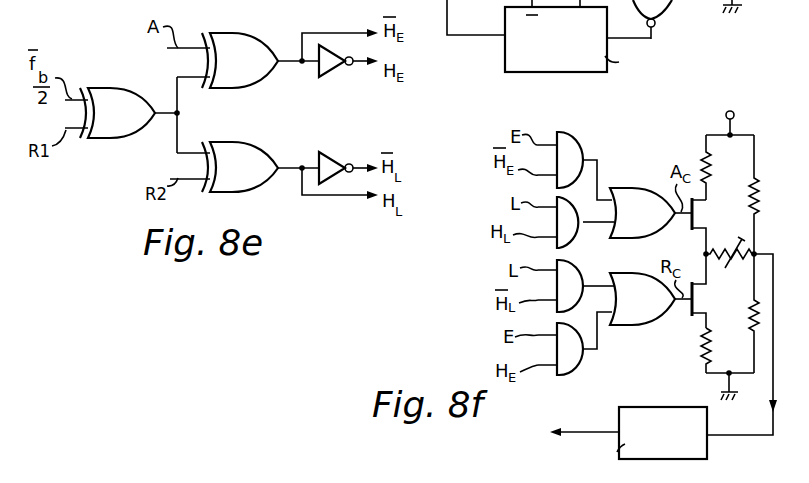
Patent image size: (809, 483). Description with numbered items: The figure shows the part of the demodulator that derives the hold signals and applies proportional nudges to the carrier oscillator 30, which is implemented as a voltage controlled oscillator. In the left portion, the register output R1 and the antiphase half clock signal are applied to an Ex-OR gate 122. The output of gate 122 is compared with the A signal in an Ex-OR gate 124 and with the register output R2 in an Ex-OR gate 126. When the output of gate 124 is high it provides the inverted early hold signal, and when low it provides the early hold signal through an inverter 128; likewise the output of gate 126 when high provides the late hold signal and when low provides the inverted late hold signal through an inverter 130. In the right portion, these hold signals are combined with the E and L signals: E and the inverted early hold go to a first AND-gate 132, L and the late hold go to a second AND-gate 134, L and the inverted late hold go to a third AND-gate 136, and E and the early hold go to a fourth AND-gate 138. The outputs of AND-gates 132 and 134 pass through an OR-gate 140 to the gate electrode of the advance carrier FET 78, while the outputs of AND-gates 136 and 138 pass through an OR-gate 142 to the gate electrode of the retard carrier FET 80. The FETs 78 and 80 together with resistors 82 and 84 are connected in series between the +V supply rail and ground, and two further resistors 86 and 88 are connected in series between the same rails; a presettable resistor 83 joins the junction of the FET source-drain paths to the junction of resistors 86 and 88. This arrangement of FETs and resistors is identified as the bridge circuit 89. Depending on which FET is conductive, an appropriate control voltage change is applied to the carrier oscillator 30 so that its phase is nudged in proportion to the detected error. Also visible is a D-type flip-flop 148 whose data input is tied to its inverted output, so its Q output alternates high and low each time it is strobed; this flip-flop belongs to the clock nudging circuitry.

In FIG. 8E, the Ex-OR gate 122 is at (125, 100).
In FIG. 8E, the Ex-OR gate 124 is at (251, 49).
In FIG. 8E, the Ex-OR gate 126 is at (253, 156).
In FIG. 8E, the inverter 128 is at (331, 70).
In FIG. 8E, the inverter 130 is at (334, 160).
In FIG. 8F, the D-type flip-flop 148 is at (505, 17).
In FIG. 8F, the first AND-gate 132 is at (568, 142).
In FIG. 8F, the second AND-gate 134 is at (573, 240).
In FIG. 8F, the third AND-gate 136 is at (573, 305).
In FIG. 8F, the fourth AND-gate 138 is at (569, 370).
In FIG. 8F, the OR-gate 140 is at (627, 198).
In FIG. 8F, the OR-gate 142 is at (645, 313).
In FIG. 8F, the advance carrier FET 78 is at (698, 208).
In FIG. 8F, the retard carrier FET 80 is at (697, 302).
In FIG. 8F, the resistor 82 is at (705, 152).
In FIG. 8F, the presettable resistor 83 is at (731, 266).
In FIG. 8F, the resistor 84 is at (698, 354).
In FIG. 8F, the resistor 86 is at (753, 188).
In FIG. 8F, the resistor 88 is at (752, 330).
In FIG. 8F, the bridge circuit 89 is at (709, 115).
In FIG. 8F, the carrier oscillator 30 is at (662, 417).